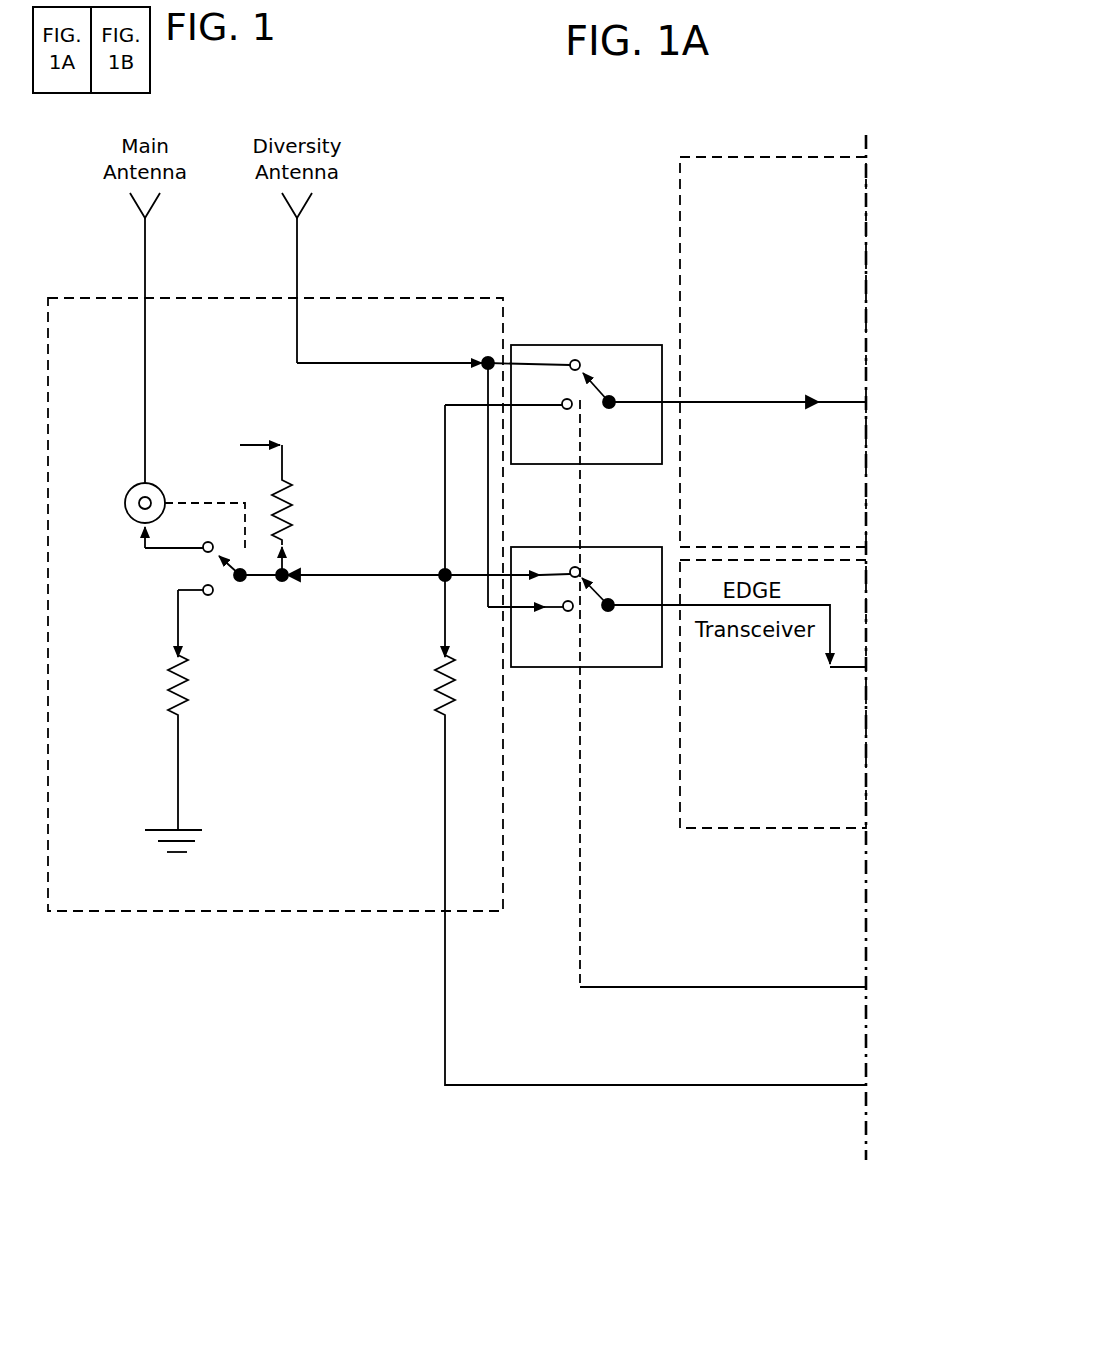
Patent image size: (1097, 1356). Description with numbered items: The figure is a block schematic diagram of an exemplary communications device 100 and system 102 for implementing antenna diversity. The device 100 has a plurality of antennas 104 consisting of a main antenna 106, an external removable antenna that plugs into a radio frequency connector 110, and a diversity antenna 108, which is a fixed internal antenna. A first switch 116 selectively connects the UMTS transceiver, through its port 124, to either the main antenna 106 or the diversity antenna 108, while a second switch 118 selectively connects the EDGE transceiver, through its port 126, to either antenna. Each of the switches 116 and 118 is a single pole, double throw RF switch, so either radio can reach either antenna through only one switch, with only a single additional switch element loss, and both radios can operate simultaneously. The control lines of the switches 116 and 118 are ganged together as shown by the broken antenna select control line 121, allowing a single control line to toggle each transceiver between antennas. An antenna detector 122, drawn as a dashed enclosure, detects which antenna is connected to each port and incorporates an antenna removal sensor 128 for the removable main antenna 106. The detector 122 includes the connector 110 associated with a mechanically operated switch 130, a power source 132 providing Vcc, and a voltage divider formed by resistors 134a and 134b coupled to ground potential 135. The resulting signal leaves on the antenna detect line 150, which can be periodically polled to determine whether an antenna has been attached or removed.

The communications device 100 is at (616, 238).
The system 102 is at (363, 964).
The plurality of antennas 104 is at (372, 162).
The main antenna 106 is at (135, 208).
The diversity antenna 108 is at (305, 210).
The radio frequency (RF) connector 110 is at (151, 487).
The first switch 116 is at (570, 346).
The second switch 118 is at (597, 668).
The antenna select switch control lines 121 is at (580, 912).
The antenna detector 122 is at (80, 913).
The port of the first radio section 124 is at (808, 398).
The port of the second radio section 126 is at (826, 668).
The antenna removal sensor 128 is at (276, 727).
The switch 130 is at (221, 559).
The power source 132 is at (312, 424).
The resistor 134a is at (292, 508).
The resistor 134b is at (165, 700).
The ground potential 135 is at (160, 843).
The antenna detect line 150 is at (468, 1087).